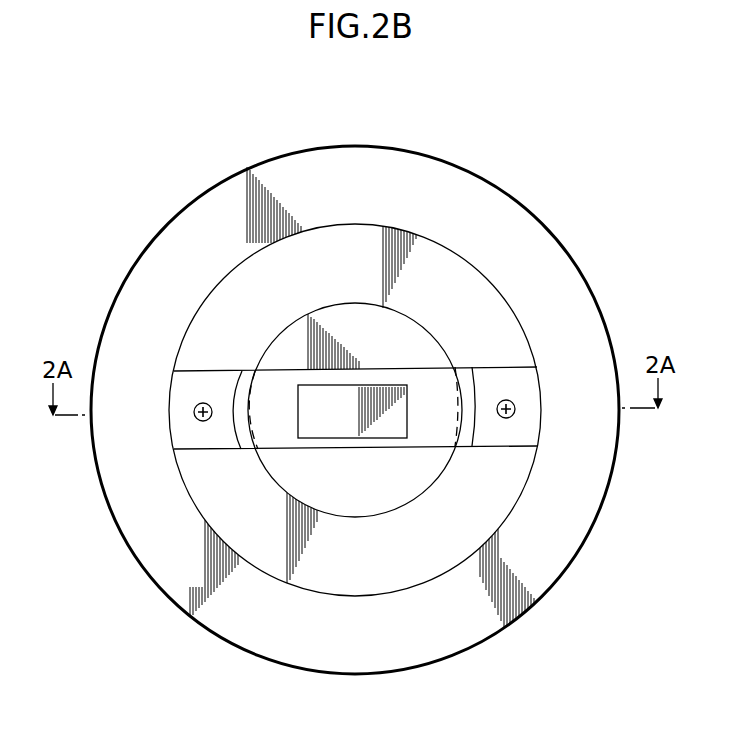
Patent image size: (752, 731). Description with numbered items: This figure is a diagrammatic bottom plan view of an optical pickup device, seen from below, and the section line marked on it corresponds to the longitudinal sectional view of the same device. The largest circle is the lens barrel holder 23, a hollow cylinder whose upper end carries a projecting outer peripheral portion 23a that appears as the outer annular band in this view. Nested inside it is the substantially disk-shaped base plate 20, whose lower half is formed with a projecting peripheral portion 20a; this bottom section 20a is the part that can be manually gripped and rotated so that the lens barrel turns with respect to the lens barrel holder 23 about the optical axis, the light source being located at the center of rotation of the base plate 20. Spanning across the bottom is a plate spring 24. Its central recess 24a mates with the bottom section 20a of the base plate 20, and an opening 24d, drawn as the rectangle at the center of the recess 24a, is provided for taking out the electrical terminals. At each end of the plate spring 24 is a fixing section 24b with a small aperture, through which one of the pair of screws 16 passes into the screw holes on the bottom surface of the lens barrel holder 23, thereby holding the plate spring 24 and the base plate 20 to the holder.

The screws 16 is at (195, 411).
The base plate 20 is at (408, 316).
The projecting peripheral portion 20a is at (425, 348).
The lens barrel holder 23 is at (422, 153).
The projecting outer peripheral portion 23a is at (458, 197).
The plate spring 24 is at (358, 428).
The recess 24a is at (430, 433).
The fixing section 24b is at (213, 443).
The opening 24d is at (353, 432).